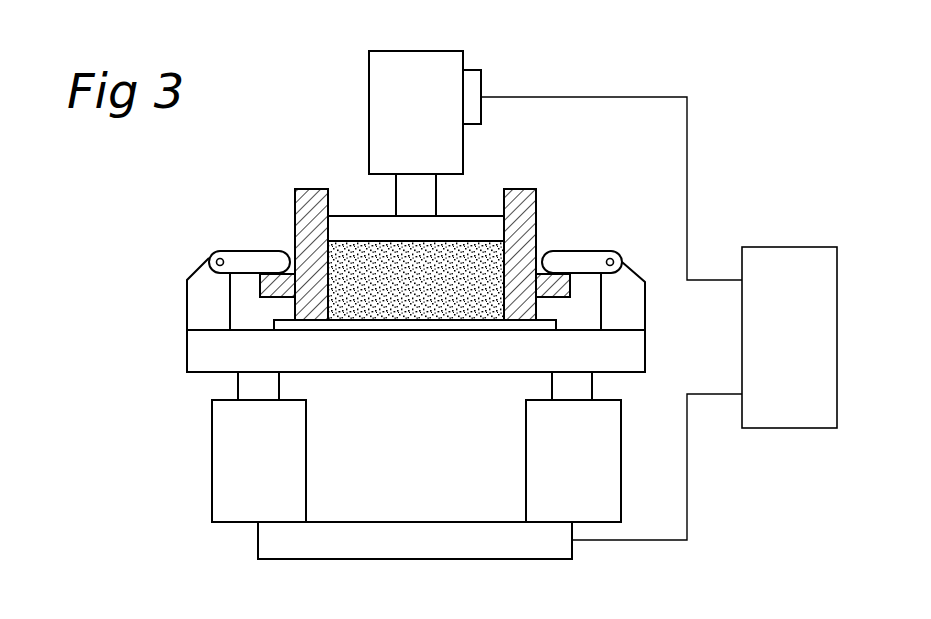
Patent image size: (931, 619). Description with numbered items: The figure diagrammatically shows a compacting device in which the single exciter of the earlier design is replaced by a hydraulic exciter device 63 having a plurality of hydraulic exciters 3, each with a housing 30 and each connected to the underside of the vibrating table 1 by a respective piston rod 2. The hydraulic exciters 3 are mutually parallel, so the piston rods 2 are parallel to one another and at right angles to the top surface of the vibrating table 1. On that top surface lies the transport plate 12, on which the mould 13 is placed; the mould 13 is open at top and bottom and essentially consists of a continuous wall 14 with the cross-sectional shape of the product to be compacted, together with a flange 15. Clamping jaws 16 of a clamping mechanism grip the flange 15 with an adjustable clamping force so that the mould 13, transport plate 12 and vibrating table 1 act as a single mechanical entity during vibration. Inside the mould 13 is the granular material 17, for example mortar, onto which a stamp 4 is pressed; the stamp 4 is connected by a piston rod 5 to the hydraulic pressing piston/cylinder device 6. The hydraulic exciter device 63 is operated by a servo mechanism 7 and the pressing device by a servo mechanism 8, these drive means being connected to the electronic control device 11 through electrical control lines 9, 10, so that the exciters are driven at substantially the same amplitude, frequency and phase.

The vibrating table 1 is at (187, 356).
The piston rod 2 is at (262, 384).
The hydraulic exciter 3 is at (188, 408).
The stamp 4 is at (458, 232).
The piston rod 5 is at (397, 181).
The hydraulic pressing piston/cylinder device 6 is at (382, 84).
The servo mechanism 7 is at (454, 537).
The servo mechanism 8 is at (473, 82).
The electrical control line 9 is at (687, 467).
The electrical control line 10 is at (648, 97).
The electronic control device 11 is at (785, 273).
The transport plate 12 is at (452, 325).
The mould 13 is at (251, 305).
The continuous wall 14 is at (520, 210).
The flange 15 is at (568, 297).
The clamping jaws 16 is at (247, 262).
The granular material 17 is at (390, 297).
The housing 30 is at (236, 438).
The hydraulic exciter device 63 is at (178, 437).